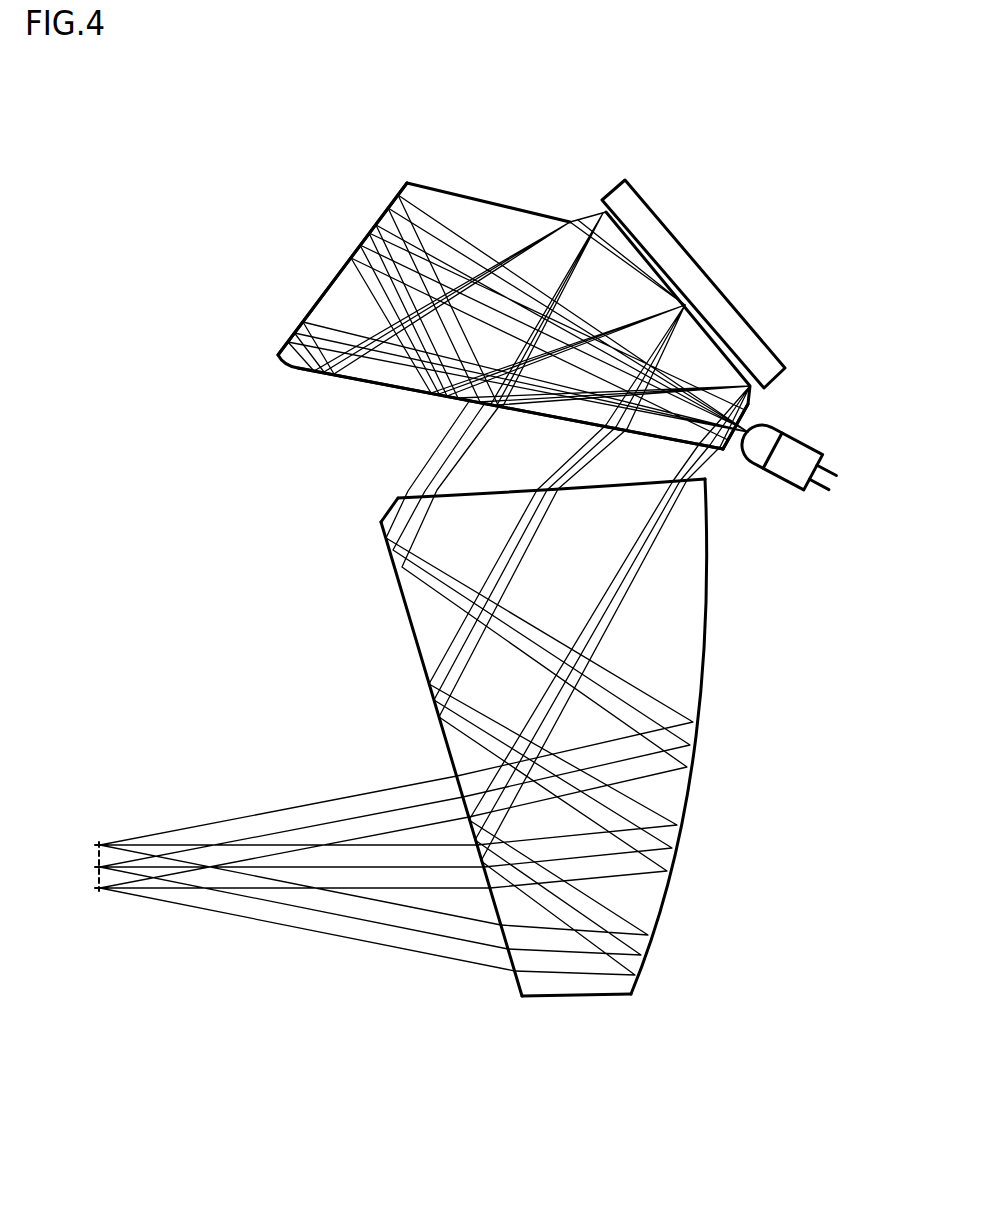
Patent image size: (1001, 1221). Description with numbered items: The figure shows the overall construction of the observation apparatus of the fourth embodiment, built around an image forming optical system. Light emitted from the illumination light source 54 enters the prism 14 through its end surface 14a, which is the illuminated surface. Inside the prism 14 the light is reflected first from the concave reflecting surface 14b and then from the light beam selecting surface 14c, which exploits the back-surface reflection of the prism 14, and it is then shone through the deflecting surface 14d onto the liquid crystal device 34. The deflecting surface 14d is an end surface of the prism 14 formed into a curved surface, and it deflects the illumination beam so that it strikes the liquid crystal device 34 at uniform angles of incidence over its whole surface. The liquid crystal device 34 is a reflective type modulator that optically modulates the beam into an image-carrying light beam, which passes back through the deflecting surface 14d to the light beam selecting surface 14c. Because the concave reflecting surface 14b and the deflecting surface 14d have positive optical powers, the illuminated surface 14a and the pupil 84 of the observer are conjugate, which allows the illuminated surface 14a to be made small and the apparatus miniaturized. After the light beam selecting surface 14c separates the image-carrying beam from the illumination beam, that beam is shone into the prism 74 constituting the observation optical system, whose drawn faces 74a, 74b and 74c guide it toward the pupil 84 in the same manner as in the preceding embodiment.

The prism 14 is at (491, 220).
The end surface 14a is at (729, 455).
The concave reflecting surface 14b is at (400, 182).
The light beam selecting surface 14c is at (365, 387).
The deflecting surface 14d is at (588, 221).
The liquid crystal device 34 is at (750, 348).
The illumination light source 54 is at (786, 456).
The prism 74 is at (677, 662).
The entrance/exit face of lens 74a is at (517, 988).
The bottom face of lens 74b is at (635, 991).
The curved reflecting face of lens 74c is at (693, 489).
The pupil 84 is at (98, 891).